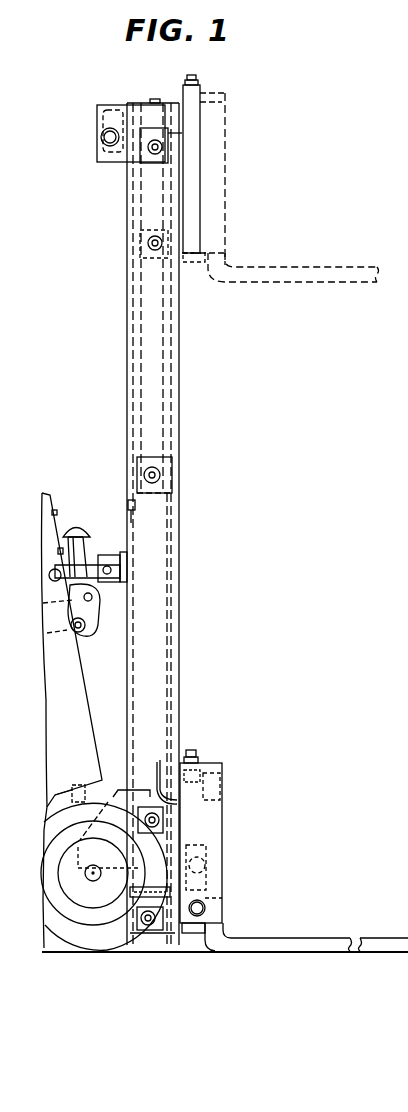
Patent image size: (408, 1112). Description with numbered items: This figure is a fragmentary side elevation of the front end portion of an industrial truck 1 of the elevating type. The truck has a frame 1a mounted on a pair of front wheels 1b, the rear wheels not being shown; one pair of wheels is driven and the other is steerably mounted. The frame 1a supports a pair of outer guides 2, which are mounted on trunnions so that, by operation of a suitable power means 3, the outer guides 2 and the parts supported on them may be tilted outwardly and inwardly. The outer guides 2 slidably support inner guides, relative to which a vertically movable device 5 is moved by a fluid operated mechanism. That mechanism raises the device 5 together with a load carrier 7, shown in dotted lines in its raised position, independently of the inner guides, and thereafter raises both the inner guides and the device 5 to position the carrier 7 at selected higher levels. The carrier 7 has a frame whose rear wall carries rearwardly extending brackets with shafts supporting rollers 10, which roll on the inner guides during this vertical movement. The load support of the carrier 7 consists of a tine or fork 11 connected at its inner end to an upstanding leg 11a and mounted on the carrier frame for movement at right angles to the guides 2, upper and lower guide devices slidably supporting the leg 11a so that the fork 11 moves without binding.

The front end portion of an industrial truck 1 is at (72, 720).
The frame 1a is at (83, 790).
The front wheels 1b is at (58, 932).
The outer guides 2 is at (176, 388).
The power means 3 is at (117, 623).
The vertically movable device 5 is at (210, 828).
The load carrier 7 is at (247, 870).
The rollers 10 is at (158, 937).
The tine or fork 11 is at (293, 947).
The upstanding leg 11a is at (222, 897).